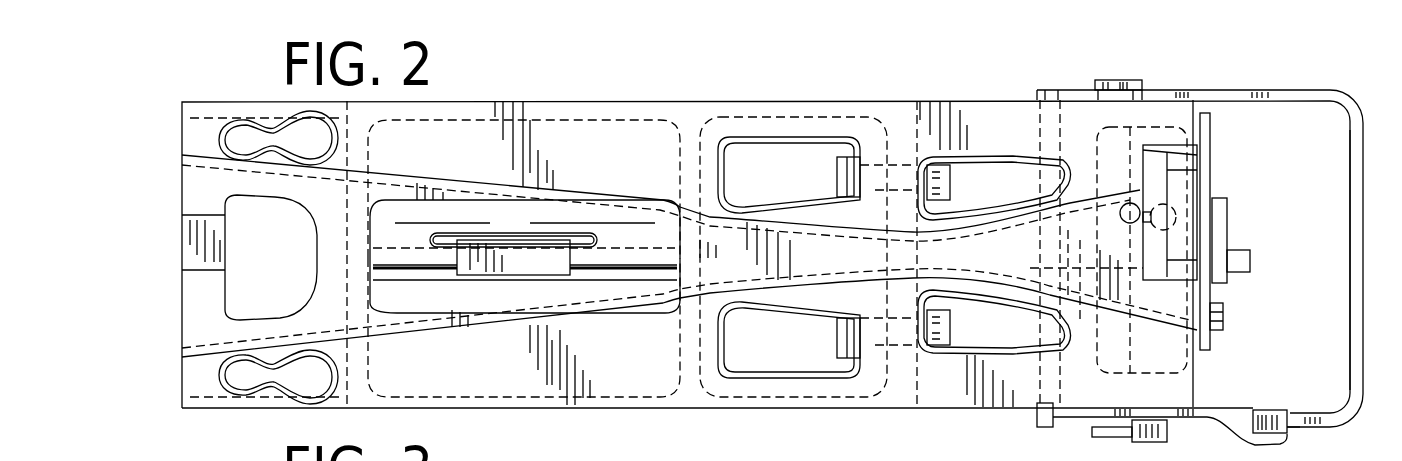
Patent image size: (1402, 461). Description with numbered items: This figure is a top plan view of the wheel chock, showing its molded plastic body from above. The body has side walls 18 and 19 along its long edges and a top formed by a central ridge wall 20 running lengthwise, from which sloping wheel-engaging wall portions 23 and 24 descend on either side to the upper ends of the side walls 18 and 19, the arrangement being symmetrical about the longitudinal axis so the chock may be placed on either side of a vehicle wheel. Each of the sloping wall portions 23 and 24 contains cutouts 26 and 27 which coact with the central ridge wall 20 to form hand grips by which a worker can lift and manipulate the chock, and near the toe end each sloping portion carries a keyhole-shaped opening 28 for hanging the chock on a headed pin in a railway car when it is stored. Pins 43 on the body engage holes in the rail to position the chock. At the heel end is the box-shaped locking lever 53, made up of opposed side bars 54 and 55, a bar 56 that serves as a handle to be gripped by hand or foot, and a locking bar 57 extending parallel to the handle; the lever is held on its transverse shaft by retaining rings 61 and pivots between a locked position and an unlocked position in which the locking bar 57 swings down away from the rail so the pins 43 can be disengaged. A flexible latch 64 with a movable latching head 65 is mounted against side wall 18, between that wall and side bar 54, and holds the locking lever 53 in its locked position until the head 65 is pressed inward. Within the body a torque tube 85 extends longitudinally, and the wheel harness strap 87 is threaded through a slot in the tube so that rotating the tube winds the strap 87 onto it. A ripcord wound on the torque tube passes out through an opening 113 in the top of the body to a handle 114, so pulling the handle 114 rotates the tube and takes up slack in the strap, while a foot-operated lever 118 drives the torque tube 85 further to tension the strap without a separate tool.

The side wall 18 is at (678, 407).
The side wall 19 is at (697, 100).
The central ridge wall 20 is at (812, 250).
The sloping wheel-engaging wall portion 23 is at (630, 368).
The sloping wheel-engaging wall portion 24 is at (558, 143).
The cutout 26 is at (762, 352).
The cutout 27 is at (748, 147).
The keyhole-shaped opening 28 is at (262, 135).
The pin 43 is at (955, 172).
The locking lever 53 is at (1302, 86).
The side bar 54 is at (1318, 443).
The side bar 55 is at (1263, 95).
The bar 56 is at (1366, 248).
The locking bar 57 is at (1040, 413).
The retaining ring 61 is at (1116, 440).
The latch 64 is at (1232, 400).
The latching head 65 is at (1275, 415).
The torque tube 85 is at (624, 243).
The wheel harness strap 87 is at (468, 262).
The opening 113 is at (1143, 210).
The handle 114 is at (1185, 195).
The foot-operated lever 118 is at (1214, 163).